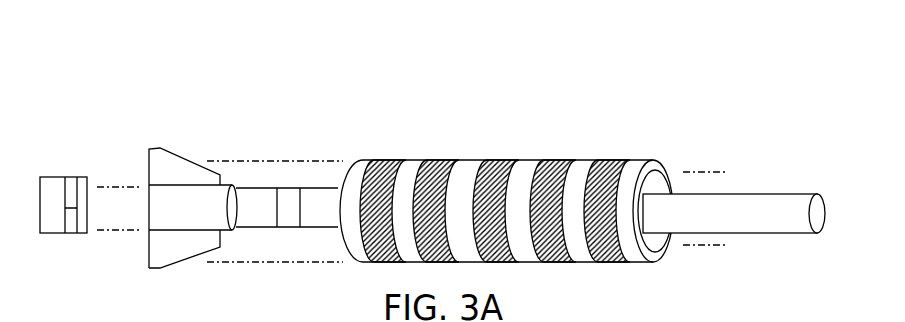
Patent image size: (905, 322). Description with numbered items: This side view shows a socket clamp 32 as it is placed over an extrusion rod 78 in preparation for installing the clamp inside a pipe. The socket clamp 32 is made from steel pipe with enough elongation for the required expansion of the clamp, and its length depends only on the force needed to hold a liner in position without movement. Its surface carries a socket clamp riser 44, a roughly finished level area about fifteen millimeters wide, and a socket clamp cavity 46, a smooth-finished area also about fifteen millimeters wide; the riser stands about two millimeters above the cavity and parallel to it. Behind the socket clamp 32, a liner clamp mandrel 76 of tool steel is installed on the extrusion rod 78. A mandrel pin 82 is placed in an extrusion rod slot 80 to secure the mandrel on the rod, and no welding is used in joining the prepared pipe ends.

The socket clamp 32 is at (506, 135).
The socket clamp riser 44 is at (395, 158).
The socket clamp cavity 46 is at (603, 158).
The liner clamp mandrel 76 is at (183, 162).
The extrusion rod 78 is at (765, 192).
The extrusion rod slot 80 is at (290, 188).
The mandrel pin 82 is at (60, 177).